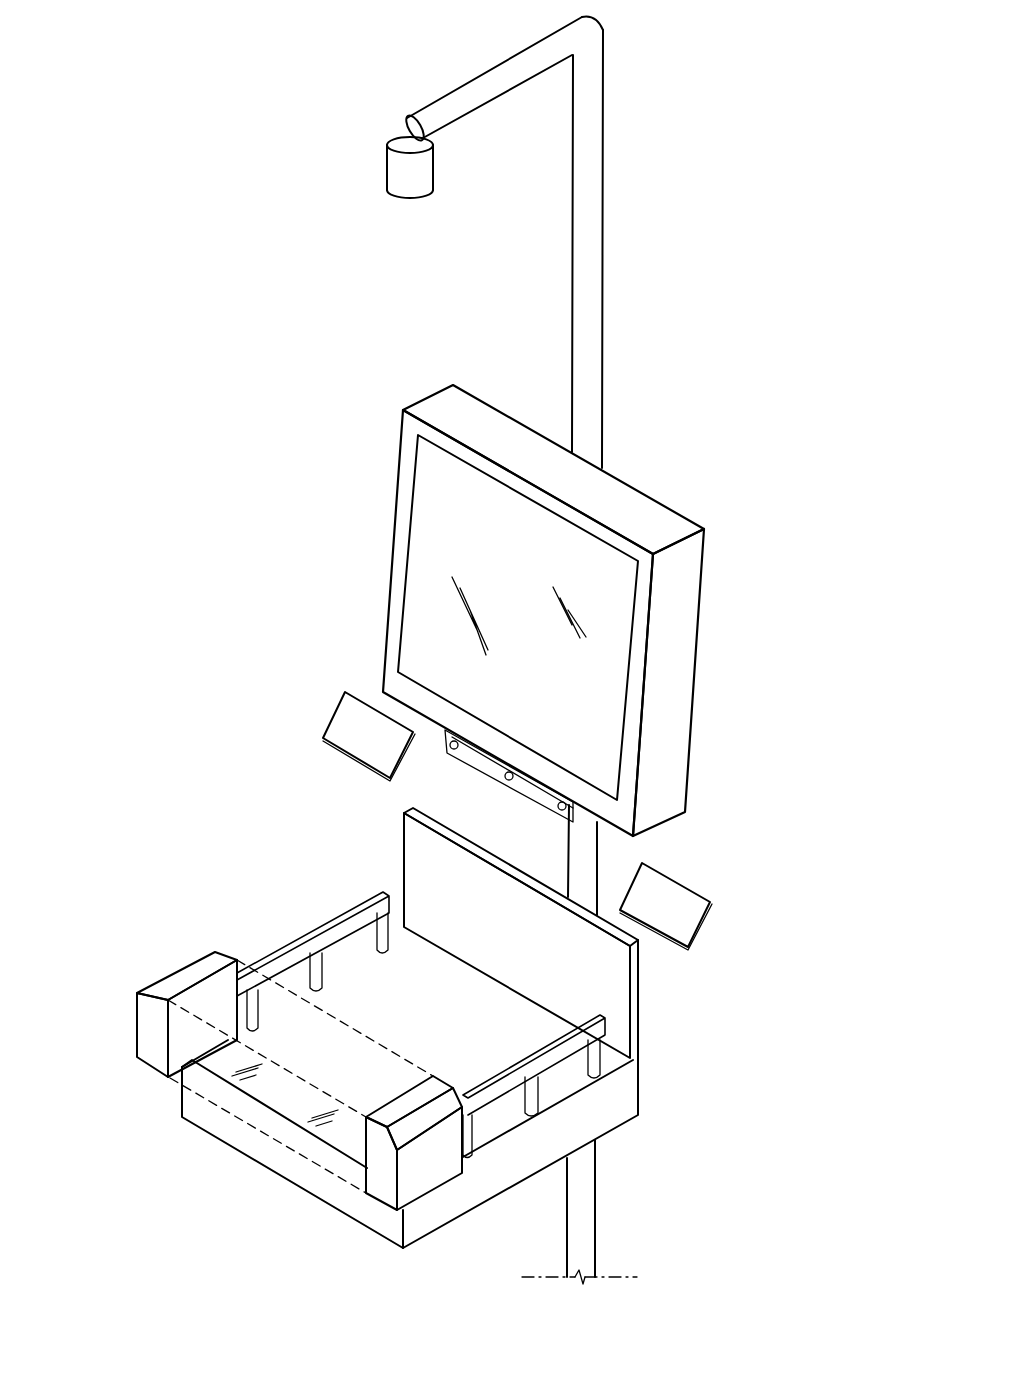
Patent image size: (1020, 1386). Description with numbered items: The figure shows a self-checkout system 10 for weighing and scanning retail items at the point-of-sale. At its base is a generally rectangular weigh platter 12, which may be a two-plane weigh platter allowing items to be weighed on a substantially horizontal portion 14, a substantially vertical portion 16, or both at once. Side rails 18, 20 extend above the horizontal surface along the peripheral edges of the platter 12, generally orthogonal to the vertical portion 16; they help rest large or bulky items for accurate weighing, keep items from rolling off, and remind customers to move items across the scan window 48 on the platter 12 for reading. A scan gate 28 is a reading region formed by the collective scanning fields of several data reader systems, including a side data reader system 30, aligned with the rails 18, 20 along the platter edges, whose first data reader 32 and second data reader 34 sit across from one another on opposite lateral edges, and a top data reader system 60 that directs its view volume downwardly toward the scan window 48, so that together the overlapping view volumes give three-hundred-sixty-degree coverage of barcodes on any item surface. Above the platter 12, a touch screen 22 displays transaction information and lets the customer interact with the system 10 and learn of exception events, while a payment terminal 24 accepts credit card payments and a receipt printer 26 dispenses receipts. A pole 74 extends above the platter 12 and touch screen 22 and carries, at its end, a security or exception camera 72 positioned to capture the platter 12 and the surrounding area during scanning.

The self-checkout system 10 is at (152, 323).
The weigh platter 12 is at (518, 1025).
The horizontal portion 14 is at (427, 980).
The vertical portion 16 is at (600, 968).
The side rail 18 is at (277, 965).
The side rail 20 is at (497, 1085).
The touch screen 22 is at (672, 608).
The payment terminal 24 is at (678, 910).
The receipt printer 26 is at (360, 723).
The scan gate 28 is at (357, 1080).
The side data reader system 30 is at (145, 963).
The first data reader 32 is at (155, 1037).
The second data reader 34 is at (428, 1165).
The scan window 48 is at (283, 1102).
The top data reader system 60 is at (456, 768).
The camera 72 is at (402, 172).
The pole 74 is at (588, 195).